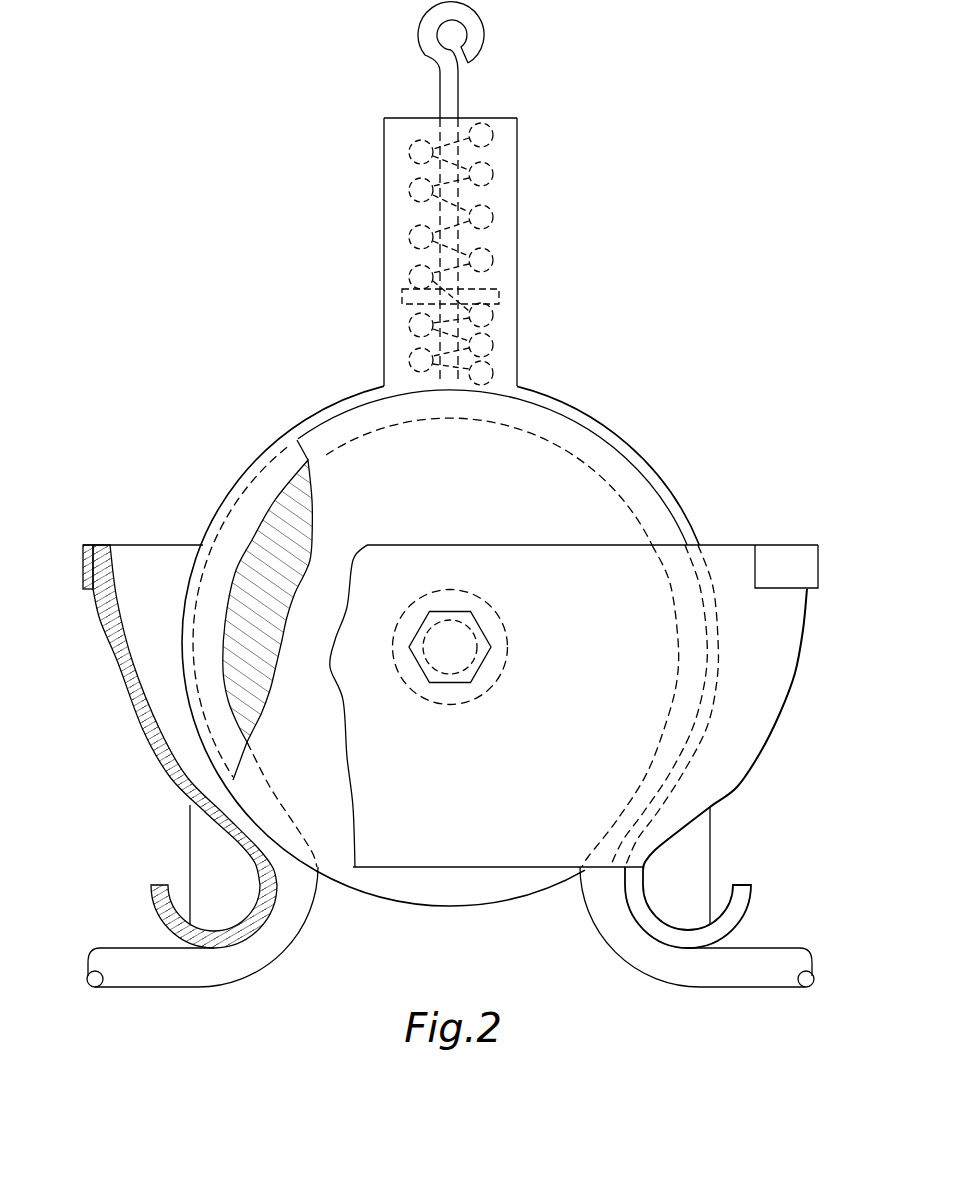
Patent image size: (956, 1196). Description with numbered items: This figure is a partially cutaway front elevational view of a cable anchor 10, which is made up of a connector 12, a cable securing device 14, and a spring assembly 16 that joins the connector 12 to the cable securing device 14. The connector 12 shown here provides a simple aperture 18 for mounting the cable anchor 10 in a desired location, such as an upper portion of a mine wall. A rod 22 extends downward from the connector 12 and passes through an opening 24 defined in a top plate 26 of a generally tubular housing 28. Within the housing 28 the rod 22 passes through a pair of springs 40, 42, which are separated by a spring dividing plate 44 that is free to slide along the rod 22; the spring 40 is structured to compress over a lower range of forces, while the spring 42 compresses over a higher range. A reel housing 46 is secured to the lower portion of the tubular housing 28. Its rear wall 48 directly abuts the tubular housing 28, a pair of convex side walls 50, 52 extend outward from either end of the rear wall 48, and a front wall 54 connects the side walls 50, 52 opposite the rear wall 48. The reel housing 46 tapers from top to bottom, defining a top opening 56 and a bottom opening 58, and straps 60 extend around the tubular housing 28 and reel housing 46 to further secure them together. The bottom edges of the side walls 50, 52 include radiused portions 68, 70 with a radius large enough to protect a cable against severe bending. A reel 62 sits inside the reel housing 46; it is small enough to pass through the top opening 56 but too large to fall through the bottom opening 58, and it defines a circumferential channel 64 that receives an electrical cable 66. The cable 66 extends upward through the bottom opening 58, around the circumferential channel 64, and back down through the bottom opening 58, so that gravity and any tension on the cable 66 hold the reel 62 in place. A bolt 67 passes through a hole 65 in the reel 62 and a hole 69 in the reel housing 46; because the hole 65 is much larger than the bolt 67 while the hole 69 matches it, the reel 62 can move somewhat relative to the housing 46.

The cable anchor 10 is at (220, 266).
The connector 12 is at (430, 22).
The cable securing device 14 is at (704, 466).
The spring assembly 16 is at (358, 186).
The aperture 18 is at (455, 32).
The rod 22 is at (452, 88).
The opening 24 is at (448, 117).
The top plate 26 is at (392, 117).
The tubular housing 28 is at (383, 240).
The spring 40 is at (488, 177).
The spring 42 is at (407, 325).
The spring dividing plate 44 is at (500, 293).
The reel housing 46 is at (597, 692).
The rear wall 48 is at (137, 596).
The convex side wall 50 is at (773, 714).
The convex side wall 52 is at (128, 690).
The front wall 54 is at (439, 811).
The top opening 56 is at (160, 540).
The bottom opening 58 is at (355, 922).
The straps 60 is at (87, 575).
The reel 62 is at (439, 492).
The circumferential channel 64 is at (573, 452).
The hole 65 is at (498, 615).
The electrical cable 66 is at (263, 458).
The bolt 67 is at (440, 683).
The radiused portion 68 is at (740, 902).
The hole 69 is at (473, 663).
The radiused portion 70 is at (158, 898).